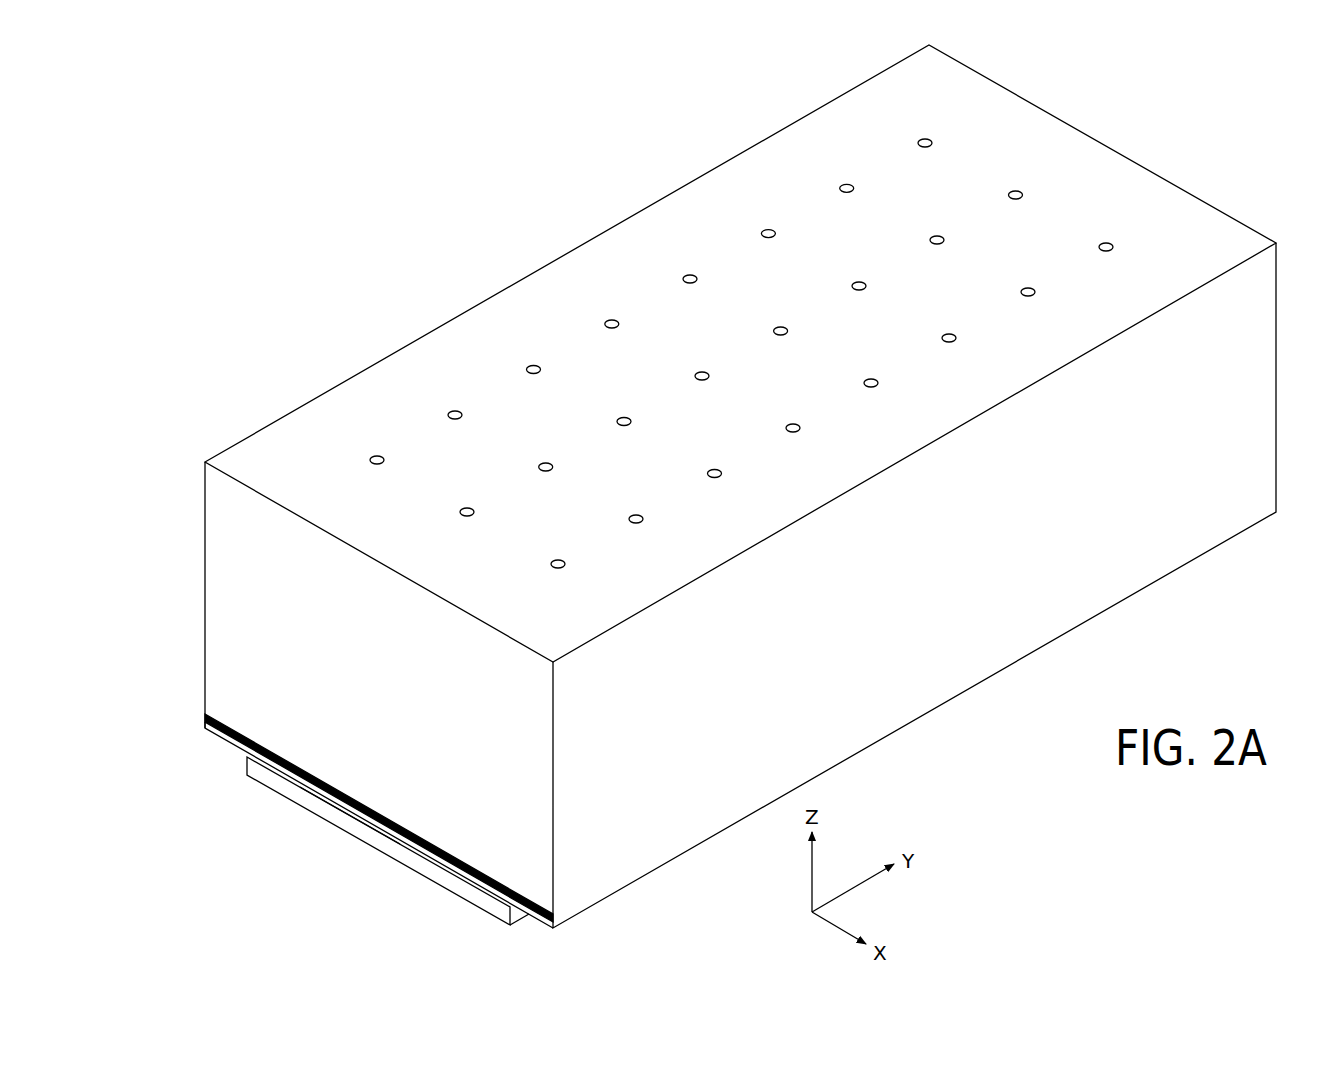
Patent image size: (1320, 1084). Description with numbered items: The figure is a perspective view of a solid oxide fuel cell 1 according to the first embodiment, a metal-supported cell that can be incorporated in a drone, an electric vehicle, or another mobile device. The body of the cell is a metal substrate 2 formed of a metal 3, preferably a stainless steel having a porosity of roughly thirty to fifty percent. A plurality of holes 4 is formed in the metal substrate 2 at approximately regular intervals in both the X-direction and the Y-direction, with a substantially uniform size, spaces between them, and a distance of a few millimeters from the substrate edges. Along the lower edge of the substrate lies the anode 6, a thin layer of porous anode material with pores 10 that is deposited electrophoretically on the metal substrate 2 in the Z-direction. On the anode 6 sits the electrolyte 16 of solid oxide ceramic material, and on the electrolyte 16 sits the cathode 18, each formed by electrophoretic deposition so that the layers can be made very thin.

The solid oxide fuel cell 1 is at (237, 282).
The metal substrate 2 is at (206, 592).
The metal 3 is at (477, 343).
The holes 4 is at (1106, 242).
The anode 6 is at (206, 716).
The pores 10 is at (350, 806).
The electrolyte 16 is at (205, 726).
The cathode 18 is at (247, 758).